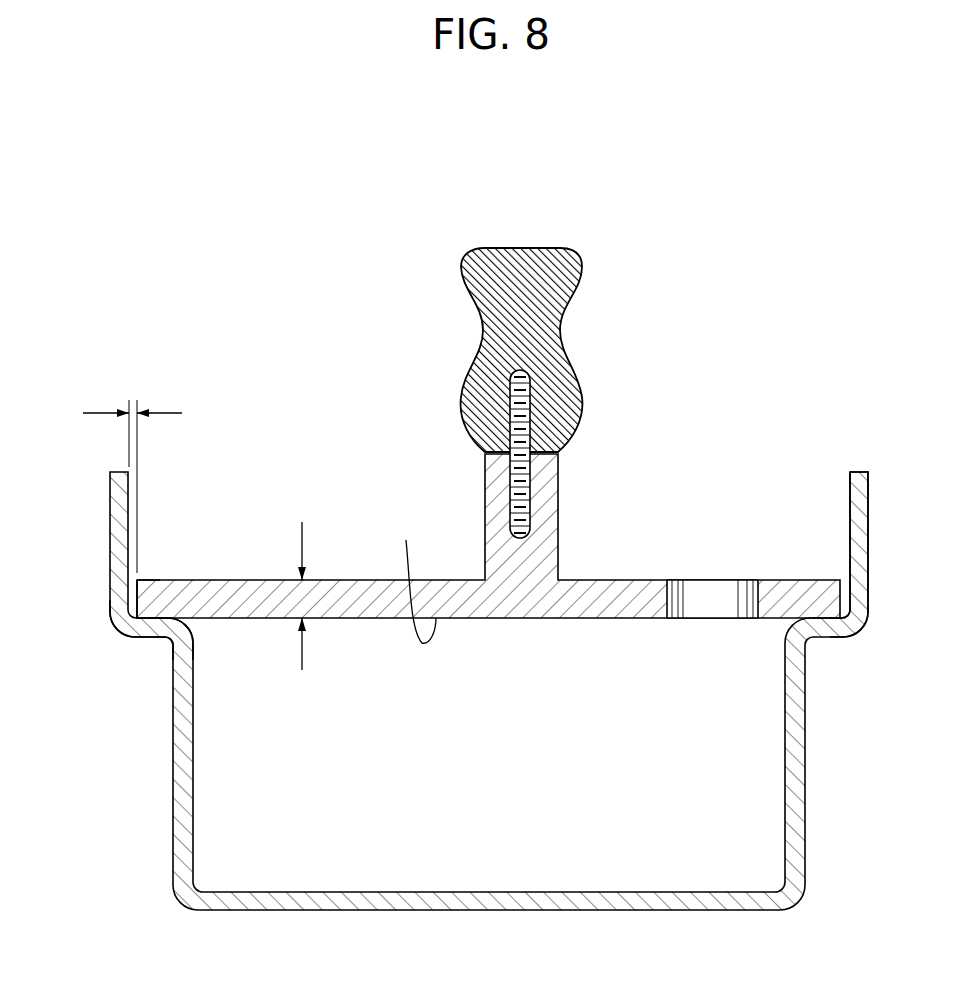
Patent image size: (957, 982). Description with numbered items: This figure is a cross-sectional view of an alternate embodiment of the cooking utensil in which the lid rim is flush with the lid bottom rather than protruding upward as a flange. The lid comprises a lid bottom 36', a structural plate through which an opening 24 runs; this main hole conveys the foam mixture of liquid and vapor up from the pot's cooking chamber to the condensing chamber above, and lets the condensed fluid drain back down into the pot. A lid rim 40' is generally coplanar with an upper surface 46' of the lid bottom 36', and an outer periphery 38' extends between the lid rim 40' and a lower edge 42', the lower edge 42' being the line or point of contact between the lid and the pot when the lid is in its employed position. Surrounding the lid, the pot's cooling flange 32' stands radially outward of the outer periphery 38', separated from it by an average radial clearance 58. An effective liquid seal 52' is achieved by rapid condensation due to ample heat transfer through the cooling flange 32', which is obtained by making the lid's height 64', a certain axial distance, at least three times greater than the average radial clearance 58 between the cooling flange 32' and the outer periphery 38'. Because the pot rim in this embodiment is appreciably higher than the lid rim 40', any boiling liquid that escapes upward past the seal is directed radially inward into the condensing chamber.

The opening 24 is at (708, 598).
The cooling flange 32' is at (449, 691).
The lid bottom 36' is at (413, 576).
The outer periphery 38' is at (95, 653).
The lid rim 40' is at (186, 560).
The lower edge 42' is at (149, 685).
The upper surface 46' is at (488, 536).
The liquid seal 52' is at (834, 552).
The average radial clearance 58 is at (164, 413).
The height 64' is at (280, 567).